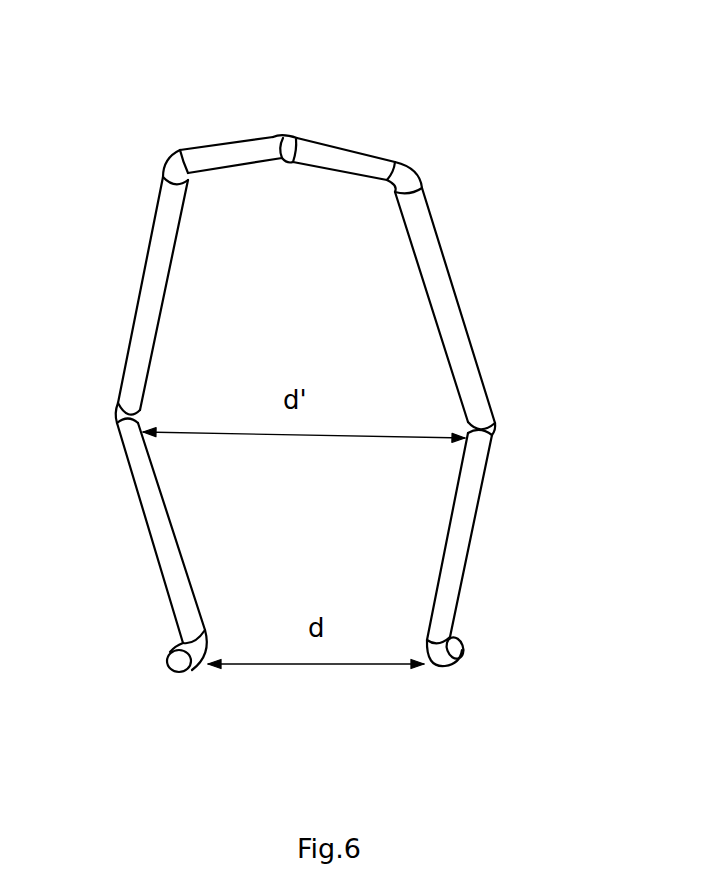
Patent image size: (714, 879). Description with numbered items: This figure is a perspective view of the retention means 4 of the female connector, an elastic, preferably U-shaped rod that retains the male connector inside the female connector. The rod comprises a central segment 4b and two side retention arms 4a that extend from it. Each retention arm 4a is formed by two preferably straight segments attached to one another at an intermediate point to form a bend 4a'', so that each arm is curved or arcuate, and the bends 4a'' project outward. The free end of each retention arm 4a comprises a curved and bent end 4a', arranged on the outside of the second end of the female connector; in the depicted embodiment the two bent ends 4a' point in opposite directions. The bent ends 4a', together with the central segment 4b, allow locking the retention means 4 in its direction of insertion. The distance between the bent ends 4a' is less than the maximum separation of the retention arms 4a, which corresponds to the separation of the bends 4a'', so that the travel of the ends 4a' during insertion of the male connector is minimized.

The retention means 4 is at (231, 70).
The central segment 4b is at (337, 160).
The retention arm 4a is at (295, 410).
The bend 4a'' is at (319, 457).
The bent end 4a' is at (334, 687).